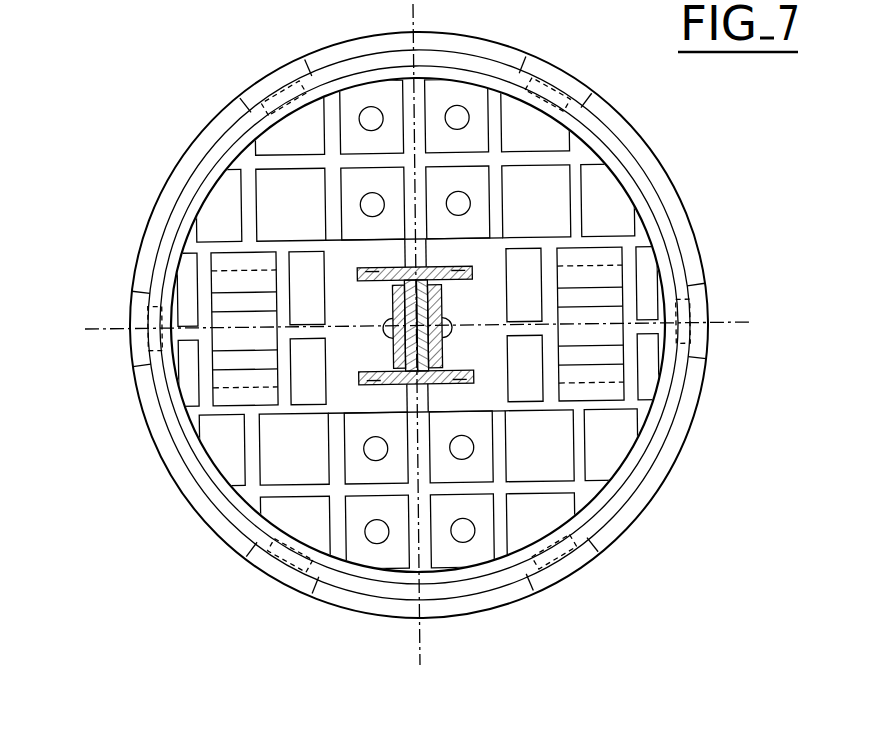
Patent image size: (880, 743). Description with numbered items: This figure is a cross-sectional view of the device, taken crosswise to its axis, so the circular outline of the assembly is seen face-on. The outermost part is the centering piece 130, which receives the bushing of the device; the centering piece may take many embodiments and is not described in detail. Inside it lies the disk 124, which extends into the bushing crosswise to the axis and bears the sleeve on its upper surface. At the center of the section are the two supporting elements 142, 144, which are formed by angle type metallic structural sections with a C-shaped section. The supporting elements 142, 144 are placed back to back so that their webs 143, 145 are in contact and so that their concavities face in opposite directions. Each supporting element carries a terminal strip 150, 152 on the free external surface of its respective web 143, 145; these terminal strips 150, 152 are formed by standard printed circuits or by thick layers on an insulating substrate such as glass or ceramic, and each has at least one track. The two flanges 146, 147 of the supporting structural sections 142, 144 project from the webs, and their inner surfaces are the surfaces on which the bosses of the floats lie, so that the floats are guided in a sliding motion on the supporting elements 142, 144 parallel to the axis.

The disk 124 is at (546, 512).
The centering piece 130 is at (634, 518).
The supporting element 142 is at (402, 382).
The web 143 is at (402, 382).
The supporting element 144 is at (438, 387).
The web 145 is at (442, 349).
The flange 146 is at (360, 270).
The flange 147 is at (468, 268).
The terminal strip 150 is at (393, 347).
The terminal strip 152 is at (442, 302).